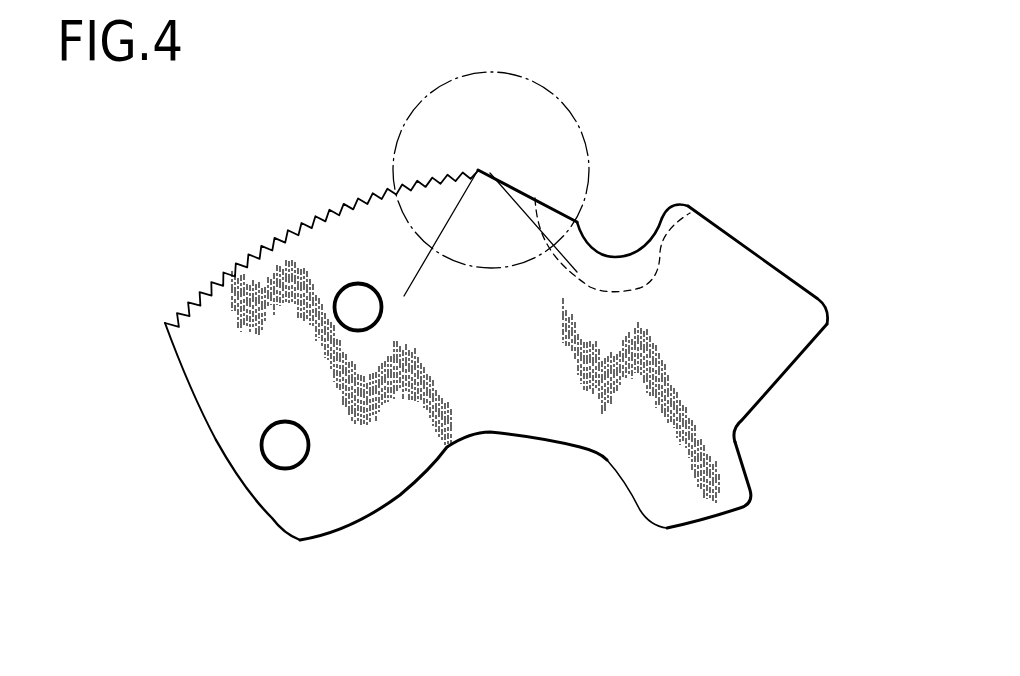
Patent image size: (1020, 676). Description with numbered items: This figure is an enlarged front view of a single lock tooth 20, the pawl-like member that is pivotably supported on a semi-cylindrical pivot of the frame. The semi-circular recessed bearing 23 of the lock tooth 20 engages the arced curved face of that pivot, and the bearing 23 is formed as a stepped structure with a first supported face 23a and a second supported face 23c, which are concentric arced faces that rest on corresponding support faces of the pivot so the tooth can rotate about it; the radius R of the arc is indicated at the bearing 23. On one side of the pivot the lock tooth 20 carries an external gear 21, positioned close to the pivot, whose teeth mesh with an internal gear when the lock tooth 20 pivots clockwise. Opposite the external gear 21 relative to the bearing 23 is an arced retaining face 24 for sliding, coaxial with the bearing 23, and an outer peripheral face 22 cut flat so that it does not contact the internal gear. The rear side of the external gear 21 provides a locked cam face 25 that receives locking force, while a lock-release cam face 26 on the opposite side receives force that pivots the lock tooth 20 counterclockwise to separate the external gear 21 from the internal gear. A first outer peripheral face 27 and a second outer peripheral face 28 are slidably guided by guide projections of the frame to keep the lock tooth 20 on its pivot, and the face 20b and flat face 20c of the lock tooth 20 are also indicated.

The lock tooth 20 is at (505, 368).
The side edge of blade 20b is at (200, 410).
The flat face of blade 20c is at (777, 277).
The external gear 21 is at (288, 226).
The outer peripheral face 22 is at (800, 287).
The bearing 23 is at (596, 244).
The first supported face 23a is at (690, 213).
The second supported face 23c is at (622, 252).
The arced retaining face 24 is at (800, 376).
The locked cam face 25 is at (420, 485).
The lock-release cam face 26 is at (633, 508).
The first outer peripheral face 27 is at (697, 528).
The second outer peripheral face 28 is at (212, 437).
The radius of cutting edge arc R is at (577, 272).